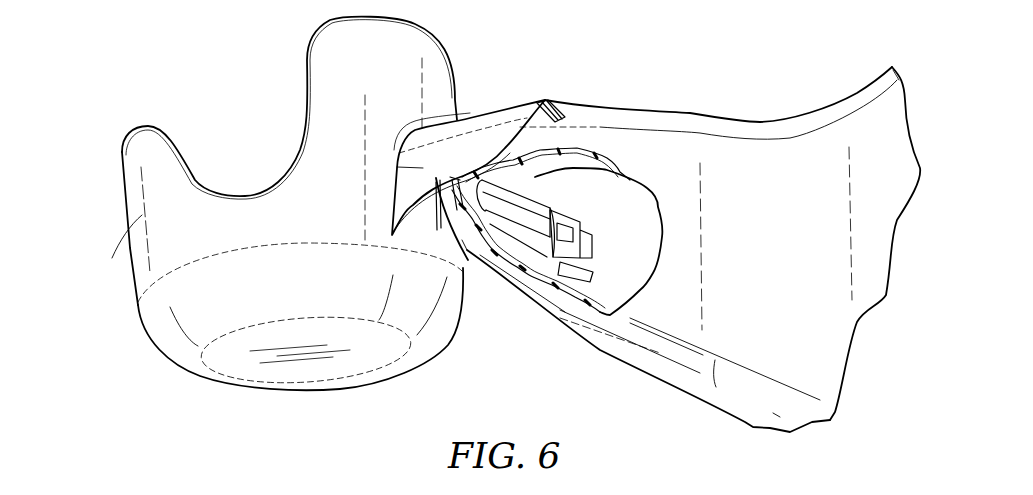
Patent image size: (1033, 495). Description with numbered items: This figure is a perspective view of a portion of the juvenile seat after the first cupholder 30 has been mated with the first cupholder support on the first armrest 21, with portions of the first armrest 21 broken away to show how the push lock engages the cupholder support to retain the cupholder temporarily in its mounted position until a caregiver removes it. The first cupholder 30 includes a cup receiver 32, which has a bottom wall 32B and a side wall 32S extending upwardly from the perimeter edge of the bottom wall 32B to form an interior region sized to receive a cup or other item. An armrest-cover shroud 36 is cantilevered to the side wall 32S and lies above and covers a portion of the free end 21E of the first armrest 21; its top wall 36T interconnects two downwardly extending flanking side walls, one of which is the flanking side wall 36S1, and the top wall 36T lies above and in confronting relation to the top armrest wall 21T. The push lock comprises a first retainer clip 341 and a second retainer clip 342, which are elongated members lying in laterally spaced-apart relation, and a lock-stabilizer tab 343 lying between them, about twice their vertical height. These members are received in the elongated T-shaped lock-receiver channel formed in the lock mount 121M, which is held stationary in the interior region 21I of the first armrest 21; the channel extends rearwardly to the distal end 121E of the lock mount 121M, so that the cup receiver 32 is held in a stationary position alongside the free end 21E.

The first cupholder 30 is at (112, 164).
The cup receiver 32 is at (163, 366).
The side wall 32S is at (133, 218).
The bottom wall 32B is at (347, 373).
The armrest-cover shroud 36 is at (481, 105).
The top wall 36T is at (553, 108).
The flanking side wall 36S1 is at (398, 170).
The first armrest 21 is at (685, 108).
The top armrest wall 21T is at (623, 111).
The interior region 21I is at (660, 181).
The free end 21E is at (448, 224).
The lock mount 121M is at (547, 190).
The distal end 121E is at (548, 308).
The first retainer clip 341 is at (560, 225).
The second retainer clip 342 is at (595, 256).
The lock-stabilizer tab 343 is at (600, 276).